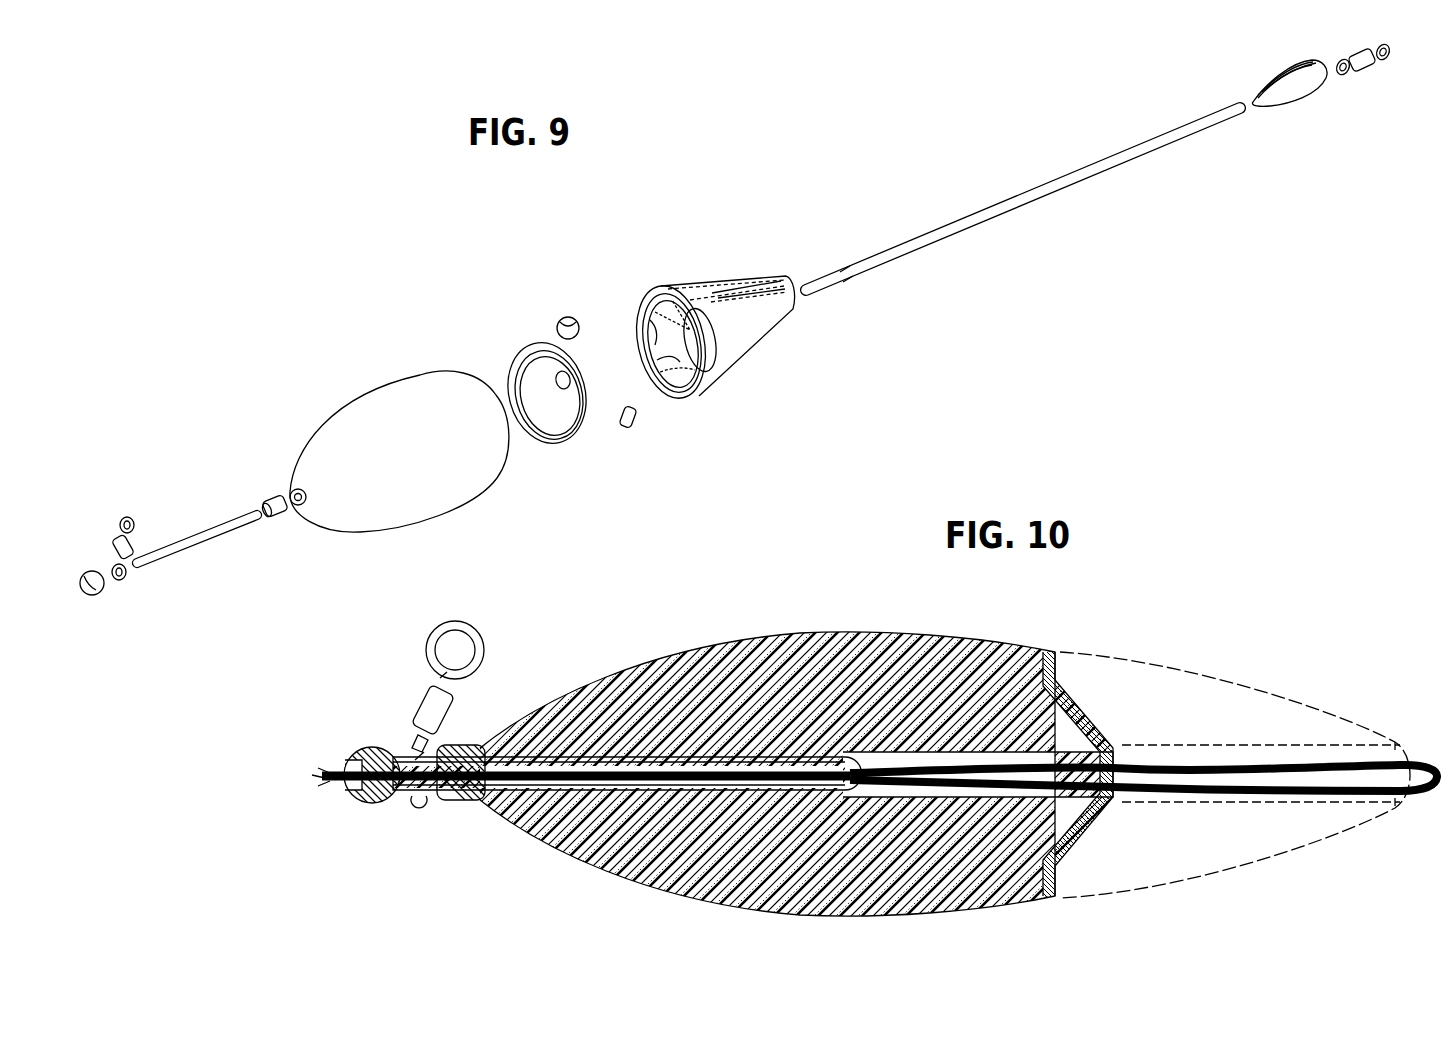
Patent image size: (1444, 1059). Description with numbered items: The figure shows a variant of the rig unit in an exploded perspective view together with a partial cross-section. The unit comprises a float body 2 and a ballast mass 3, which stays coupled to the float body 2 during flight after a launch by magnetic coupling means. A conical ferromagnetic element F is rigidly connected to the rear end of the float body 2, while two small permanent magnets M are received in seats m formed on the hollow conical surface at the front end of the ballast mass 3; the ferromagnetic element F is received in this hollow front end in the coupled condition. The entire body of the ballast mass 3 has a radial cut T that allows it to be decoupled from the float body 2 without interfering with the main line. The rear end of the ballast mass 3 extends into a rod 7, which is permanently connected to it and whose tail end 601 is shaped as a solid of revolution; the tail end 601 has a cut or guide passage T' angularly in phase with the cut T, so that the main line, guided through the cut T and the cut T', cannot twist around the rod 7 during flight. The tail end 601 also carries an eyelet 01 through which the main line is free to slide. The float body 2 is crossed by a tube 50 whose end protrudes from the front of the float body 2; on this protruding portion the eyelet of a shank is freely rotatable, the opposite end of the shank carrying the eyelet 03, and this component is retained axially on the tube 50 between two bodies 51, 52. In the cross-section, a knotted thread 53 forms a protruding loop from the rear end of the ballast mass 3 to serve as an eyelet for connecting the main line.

In FIG. 9, the float body 2 is at (371, 384).
In FIG. 10, the float body 2 is at (794, 622).
In FIG. 9, the ferromagnetic element F is at (524, 347).
In FIG. 10, the ferromagnetic element F is at (1068, 678).
In FIG. 9, the permanent magnet M is at (573, 316).
In FIG. 9, the seat m is at (645, 335).
In FIG. 9, the ballast mass 3 is at (703, 268).
In FIG. 10, the ballast mass 3 is at (1308, 692).
In FIG. 9, the radial cut T is at (748, 253).
In FIG. 9, the rod 7 is at (1014, 186).
In FIG. 9, the tail end 601 is at (1250, 79).
In FIG. 9, the cut T' is at (1292, 47).
In FIG. 9, the eyelet 01 is at (1377, 70).
In FIG. 9, the tube 50 is at (220, 505).
In FIG. 10, the tube 50 is at (679, 745).
In FIG. 9, the eyelet 03 is at (133, 524).
In FIG. 10, the eyelet 03 is at (484, 628).
In FIG. 9, the body 52 is at (283, 518).
In FIG. 10, the body 52 is at (454, 808).
In FIG. 9, the body 51 is at (97, 592).
In FIG. 10, the body 51 is at (366, 810).
In FIG. 10, the knotted thread 53 is at (1358, 762).